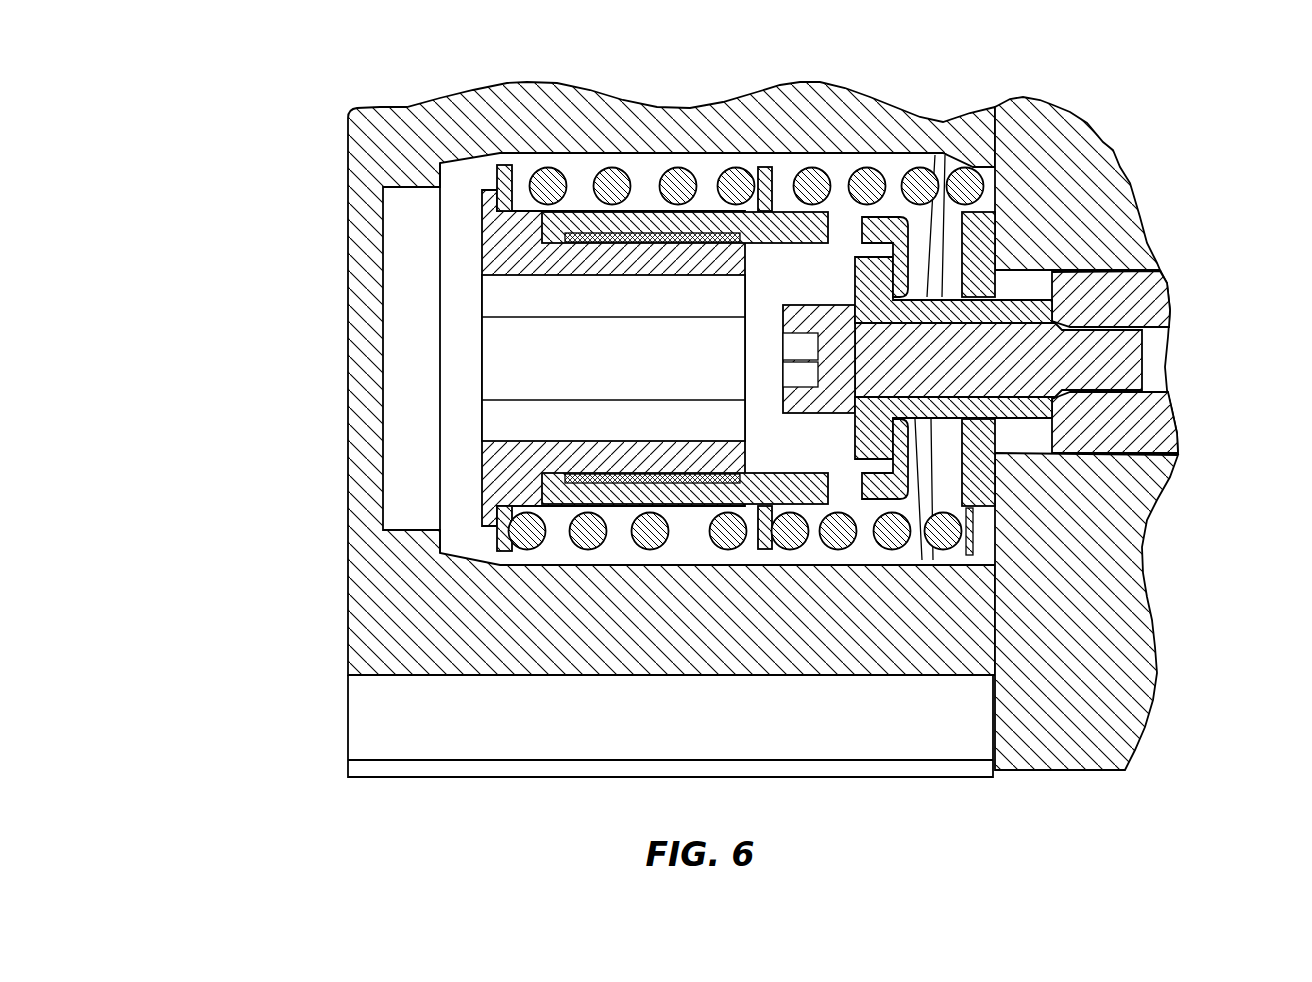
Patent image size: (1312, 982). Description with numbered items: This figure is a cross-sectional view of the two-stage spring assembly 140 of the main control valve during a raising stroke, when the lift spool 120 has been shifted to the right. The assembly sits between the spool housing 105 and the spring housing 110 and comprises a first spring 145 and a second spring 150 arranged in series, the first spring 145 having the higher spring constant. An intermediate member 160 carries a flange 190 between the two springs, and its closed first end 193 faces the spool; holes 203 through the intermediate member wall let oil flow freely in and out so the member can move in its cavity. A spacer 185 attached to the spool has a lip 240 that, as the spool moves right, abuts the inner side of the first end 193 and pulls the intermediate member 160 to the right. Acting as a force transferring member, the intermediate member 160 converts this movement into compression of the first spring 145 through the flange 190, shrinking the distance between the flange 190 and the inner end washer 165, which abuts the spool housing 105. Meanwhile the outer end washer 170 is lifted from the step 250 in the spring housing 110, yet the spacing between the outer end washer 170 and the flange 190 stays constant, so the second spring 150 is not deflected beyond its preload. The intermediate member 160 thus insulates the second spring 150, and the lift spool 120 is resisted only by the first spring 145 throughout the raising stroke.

The spool housing 105 is at (1103, 628).
The spring housing 110 is at (373, 600).
The lift spool 120 is at (1112, 446).
The two-stage spring assembly 140 is at (414, 74).
The first spring 145 is at (840, 560).
The second spring 150 is at (590, 550).
The intermediate member 160 is at (777, 212).
The inner end washer 165 is at (987, 236).
The outer end washer 170 is at (487, 545).
The spacer 185 is at (1012, 307).
The flange 190 is at (765, 548).
The first end 193 is at (973, 555).
The holes 203 is at (845, 240).
The lip 240 is at (880, 262).
The step 250 is at (455, 187).